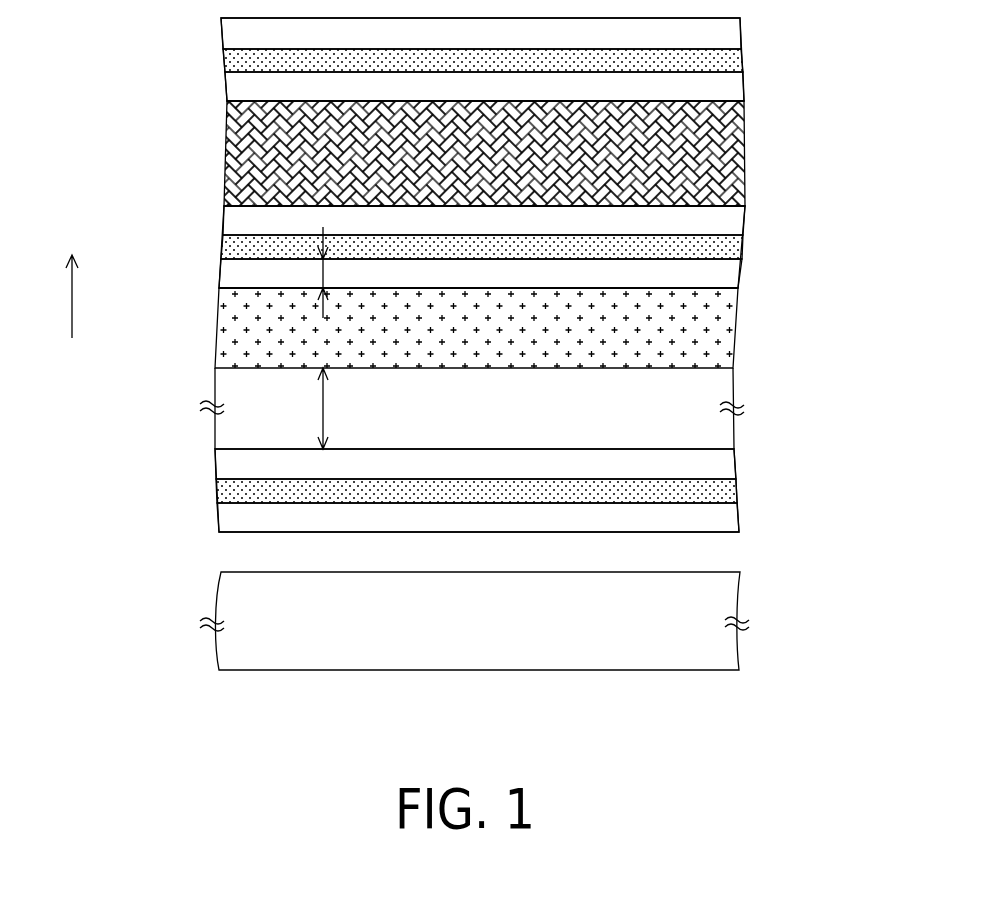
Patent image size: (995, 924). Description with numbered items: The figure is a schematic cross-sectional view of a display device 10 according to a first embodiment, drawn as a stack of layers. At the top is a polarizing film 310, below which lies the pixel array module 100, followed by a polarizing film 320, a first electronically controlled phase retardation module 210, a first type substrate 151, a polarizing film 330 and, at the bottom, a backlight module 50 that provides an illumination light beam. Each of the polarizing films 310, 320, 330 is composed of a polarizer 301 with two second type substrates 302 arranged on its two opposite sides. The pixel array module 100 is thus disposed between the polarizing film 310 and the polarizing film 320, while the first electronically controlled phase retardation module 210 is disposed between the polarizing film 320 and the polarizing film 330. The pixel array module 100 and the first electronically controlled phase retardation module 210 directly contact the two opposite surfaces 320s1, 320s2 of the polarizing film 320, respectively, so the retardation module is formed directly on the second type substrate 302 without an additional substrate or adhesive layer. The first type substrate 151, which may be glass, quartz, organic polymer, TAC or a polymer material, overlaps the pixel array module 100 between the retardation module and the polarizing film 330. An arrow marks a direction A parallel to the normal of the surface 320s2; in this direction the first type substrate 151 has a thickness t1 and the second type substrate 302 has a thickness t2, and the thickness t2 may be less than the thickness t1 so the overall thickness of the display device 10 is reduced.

The display device 10 is at (854, 760).
The backlight module 50 is at (203, 572).
The pixel array module 100 is at (203, 101).
The first type substrate 151 is at (716, 386).
The first electronically controlled phase retardation module 210 is at (203, 288).
The polarizer 301 is at (727, 60).
The second type substrate 302 is at (726, 33).
The polarizing film 310 is at (203, 18).
The polarizing film 320 is at (203, 206).
The surface of the polarizing film 320s1 is at (715, 189).
The surface of the polarizing film 320s2 is at (708, 303).
The polarizing film 330 is at (203, 449).
The thickness t1 is at (337, 408).
The thickness t2 is at (327, 271).
The direction A is at (60, 296).